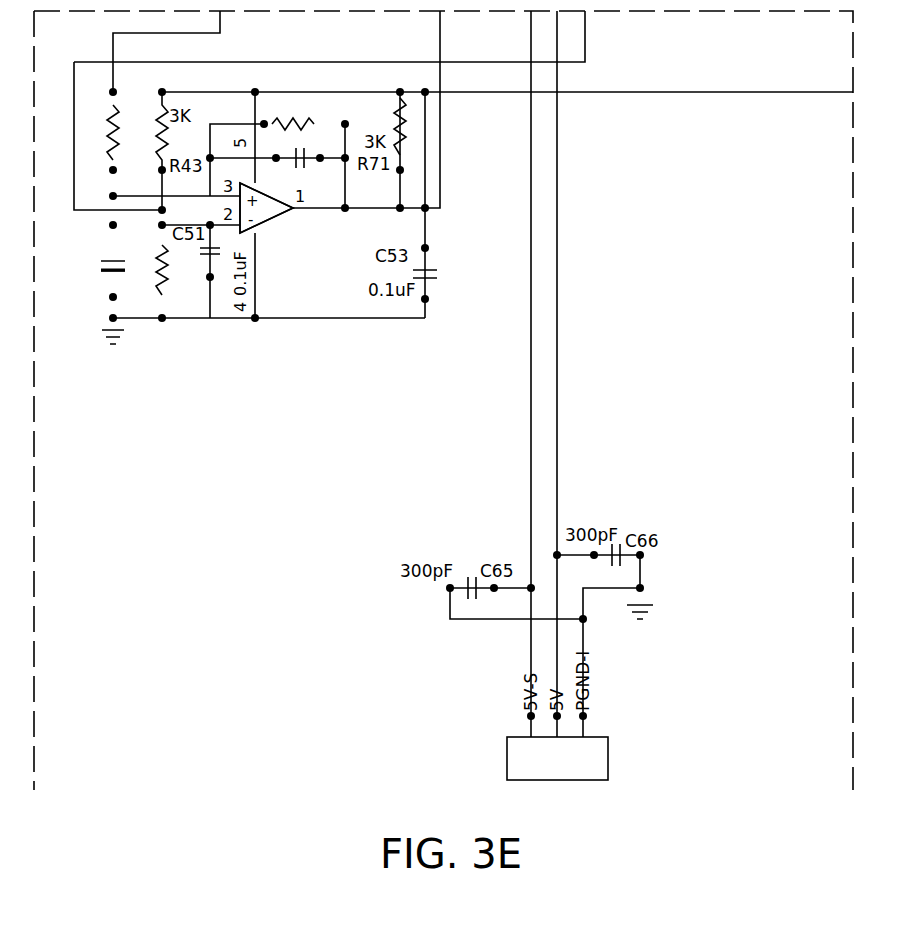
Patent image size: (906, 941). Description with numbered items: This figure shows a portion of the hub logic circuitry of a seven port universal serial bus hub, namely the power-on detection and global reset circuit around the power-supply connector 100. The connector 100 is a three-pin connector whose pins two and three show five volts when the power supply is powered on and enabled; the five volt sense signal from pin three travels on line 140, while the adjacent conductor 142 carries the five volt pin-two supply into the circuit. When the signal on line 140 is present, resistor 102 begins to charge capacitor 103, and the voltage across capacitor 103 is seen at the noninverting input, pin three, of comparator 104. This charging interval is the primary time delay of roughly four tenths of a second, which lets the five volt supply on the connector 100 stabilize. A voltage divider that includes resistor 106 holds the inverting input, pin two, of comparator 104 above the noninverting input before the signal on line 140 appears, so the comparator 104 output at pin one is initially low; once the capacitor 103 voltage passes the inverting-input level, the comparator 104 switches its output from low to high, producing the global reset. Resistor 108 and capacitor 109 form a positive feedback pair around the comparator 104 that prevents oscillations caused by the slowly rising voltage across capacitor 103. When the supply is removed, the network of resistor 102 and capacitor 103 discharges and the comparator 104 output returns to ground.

The connector 100 is at (558, 780).
The resistor 102 is at (108, 132).
The capacitor 103 is at (105, 275).
The comparator 104 is at (265, 231).
The resistor 106 is at (160, 270).
The resistor 108 is at (306, 125).
The capacitor 109 is at (325, 165).
The signal line 140 is at (531, 398).
The 5V supply line 142 is at (557, 405).